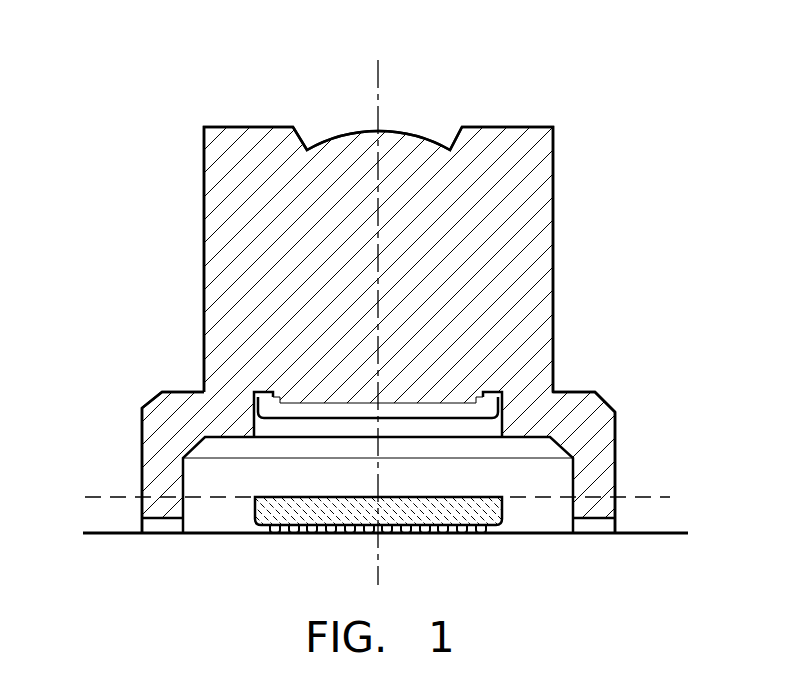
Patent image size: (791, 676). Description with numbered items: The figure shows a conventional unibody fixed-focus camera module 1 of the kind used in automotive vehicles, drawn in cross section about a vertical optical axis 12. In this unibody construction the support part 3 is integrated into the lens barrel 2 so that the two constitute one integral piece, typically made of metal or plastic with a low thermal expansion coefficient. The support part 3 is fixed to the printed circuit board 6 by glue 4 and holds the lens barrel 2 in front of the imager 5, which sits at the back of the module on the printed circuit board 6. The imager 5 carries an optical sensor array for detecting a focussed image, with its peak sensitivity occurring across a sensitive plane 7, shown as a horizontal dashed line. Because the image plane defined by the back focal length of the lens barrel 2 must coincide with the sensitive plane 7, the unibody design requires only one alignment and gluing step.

The camera module 1 is at (138, 109).
The lens barrel 2 is at (542, 173).
The support part 3 is at (592, 402).
The glue 4 is at (593, 525).
The imager 5 is at (303, 517).
The printed circuit board 6 is at (114, 533).
The sensitive plane 7 is at (112, 495).
The optical axis 12 is at (378, 80).